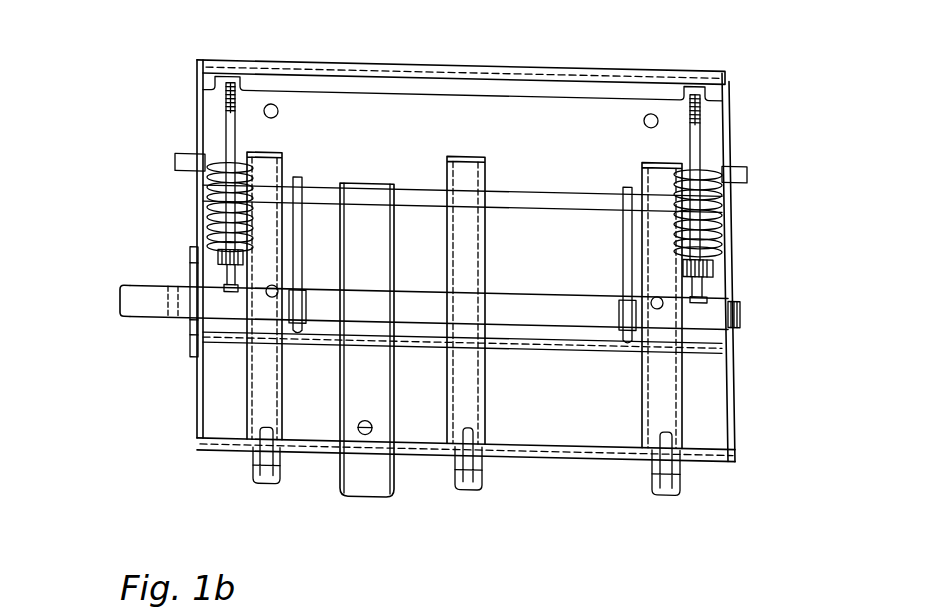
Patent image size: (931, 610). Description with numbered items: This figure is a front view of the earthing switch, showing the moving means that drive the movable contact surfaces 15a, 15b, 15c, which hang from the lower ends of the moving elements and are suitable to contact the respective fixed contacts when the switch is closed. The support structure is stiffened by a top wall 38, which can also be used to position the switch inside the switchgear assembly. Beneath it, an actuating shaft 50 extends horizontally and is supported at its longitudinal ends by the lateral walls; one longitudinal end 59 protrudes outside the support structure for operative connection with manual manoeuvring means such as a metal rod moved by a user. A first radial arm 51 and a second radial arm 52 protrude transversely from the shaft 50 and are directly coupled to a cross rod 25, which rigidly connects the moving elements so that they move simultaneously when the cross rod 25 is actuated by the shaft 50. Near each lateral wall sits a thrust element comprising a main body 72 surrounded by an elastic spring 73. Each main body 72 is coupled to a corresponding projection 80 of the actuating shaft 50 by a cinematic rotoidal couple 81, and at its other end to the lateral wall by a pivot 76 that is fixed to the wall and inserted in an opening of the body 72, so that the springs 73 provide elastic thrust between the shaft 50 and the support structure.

The movable contact surface 15a is at (260, 483).
The movable contact surface 15b is at (465, 492).
The movable contact surface 15c is at (663, 495).
The cross rod 25 is at (418, 197).
The top wall 38 is at (541, 61).
The actuating shaft 50 is at (713, 320).
The first radial arm 51 is at (303, 208).
The second radial arm 52 is at (623, 218).
The longitudinal end of the actuating shaft 59 is at (133, 298).
The main body 72 is at (226, 123).
The elastic spring 73 is at (210, 205).
The pivot 76 is at (175, 160).
The projection 80 is at (700, 295).
The cinematic rotoidal couple 81 is at (713, 267).